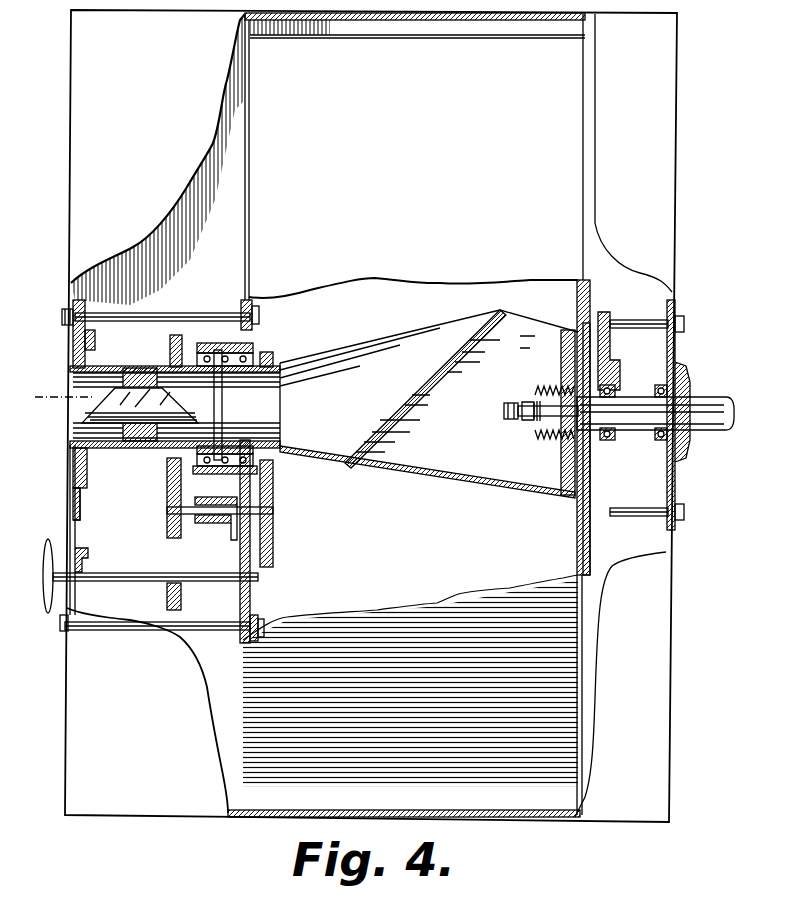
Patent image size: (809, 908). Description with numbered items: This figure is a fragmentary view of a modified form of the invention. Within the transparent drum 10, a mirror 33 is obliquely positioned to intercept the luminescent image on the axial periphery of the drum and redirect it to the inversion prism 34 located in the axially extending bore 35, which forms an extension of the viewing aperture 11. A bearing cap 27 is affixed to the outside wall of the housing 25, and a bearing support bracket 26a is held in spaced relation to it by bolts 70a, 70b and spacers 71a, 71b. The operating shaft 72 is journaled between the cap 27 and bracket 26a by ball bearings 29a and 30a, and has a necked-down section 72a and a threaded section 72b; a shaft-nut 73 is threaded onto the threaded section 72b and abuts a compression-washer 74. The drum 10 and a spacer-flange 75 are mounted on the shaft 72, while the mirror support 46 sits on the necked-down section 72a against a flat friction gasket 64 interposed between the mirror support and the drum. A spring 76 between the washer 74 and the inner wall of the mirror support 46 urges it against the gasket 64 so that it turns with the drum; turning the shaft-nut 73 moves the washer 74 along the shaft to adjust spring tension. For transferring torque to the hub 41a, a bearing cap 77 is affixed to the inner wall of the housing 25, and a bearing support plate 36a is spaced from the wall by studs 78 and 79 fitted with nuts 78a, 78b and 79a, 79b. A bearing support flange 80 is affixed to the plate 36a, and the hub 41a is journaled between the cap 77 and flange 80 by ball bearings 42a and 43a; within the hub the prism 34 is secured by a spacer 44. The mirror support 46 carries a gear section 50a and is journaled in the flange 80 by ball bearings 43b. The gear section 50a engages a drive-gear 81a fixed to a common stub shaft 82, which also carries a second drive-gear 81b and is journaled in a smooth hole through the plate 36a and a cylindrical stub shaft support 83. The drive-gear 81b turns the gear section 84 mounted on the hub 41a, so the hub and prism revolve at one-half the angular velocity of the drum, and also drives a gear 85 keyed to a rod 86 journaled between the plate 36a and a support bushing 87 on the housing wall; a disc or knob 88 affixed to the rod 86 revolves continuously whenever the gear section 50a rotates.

The transparent drum 10 is at (586, 292).
The viewing aperture 11 is at (320, 413).
The housing 25 is at (677, 234).
The bearing support bracket 26a is at (612, 368).
The bearing cap 27 is at (677, 360).
The ball bearing 29a is at (614, 441).
The ball bearing 30a is at (690, 442).
The mirror 33 is at (422, 398).
The inversion prism 34 is at (178, 395).
The axially extending bore 35 is at (73, 398).
The bearing support plate 36a is at (246, 299).
The hub 41a is at (100, 368).
The ball bearing 42a is at (72, 452).
The ball bearing 43a is at (205, 462).
The ball bearings 43b is at (250, 349).
The spacer 44 is at (164, 370).
The mirror support 46 is at (393, 475).
The gear section 50a is at (276, 358).
The flat friction gasket 64 is at (574, 498).
The bolt 70a is at (684, 323).
The bolt 70b is at (684, 511).
The spacer 71a is at (638, 318).
The spacer 71b is at (634, 518).
The operating shaft 72 is at (710, 397).
The necked-down section 72a is at (562, 428).
The threaded section 72b is at (505, 416).
The shaft-nut 73 is at (518, 396).
The compression-washer 74 is at (528, 425).
The spacer-flange 75 is at (586, 498).
The spring 76 is at (538, 430).
The bearing cap 77 is at (82, 492).
The stud 78 is at (158, 314).
The nut 78a is at (62, 318).
The nut 78b is at (272, 302).
The stud 79 is at (200, 630).
The nut 79a is at (62, 626).
The nut 79b is at (275, 622).
The bearing support flange 80 is at (219, 462).
The drive-gear 81a is at (274, 548).
The second drive-gear 81b is at (166, 534).
The common stub shaft 82 is at (273, 511).
The cylindrical stub shaft support 83 is at (216, 526).
The gear section 84 is at (170, 338).
The gear 85 is at (166, 597).
The rod 86 is at (115, 582).
The support bushing 87 is at (88, 560).
The disc or knob 88 is at (43, 590).